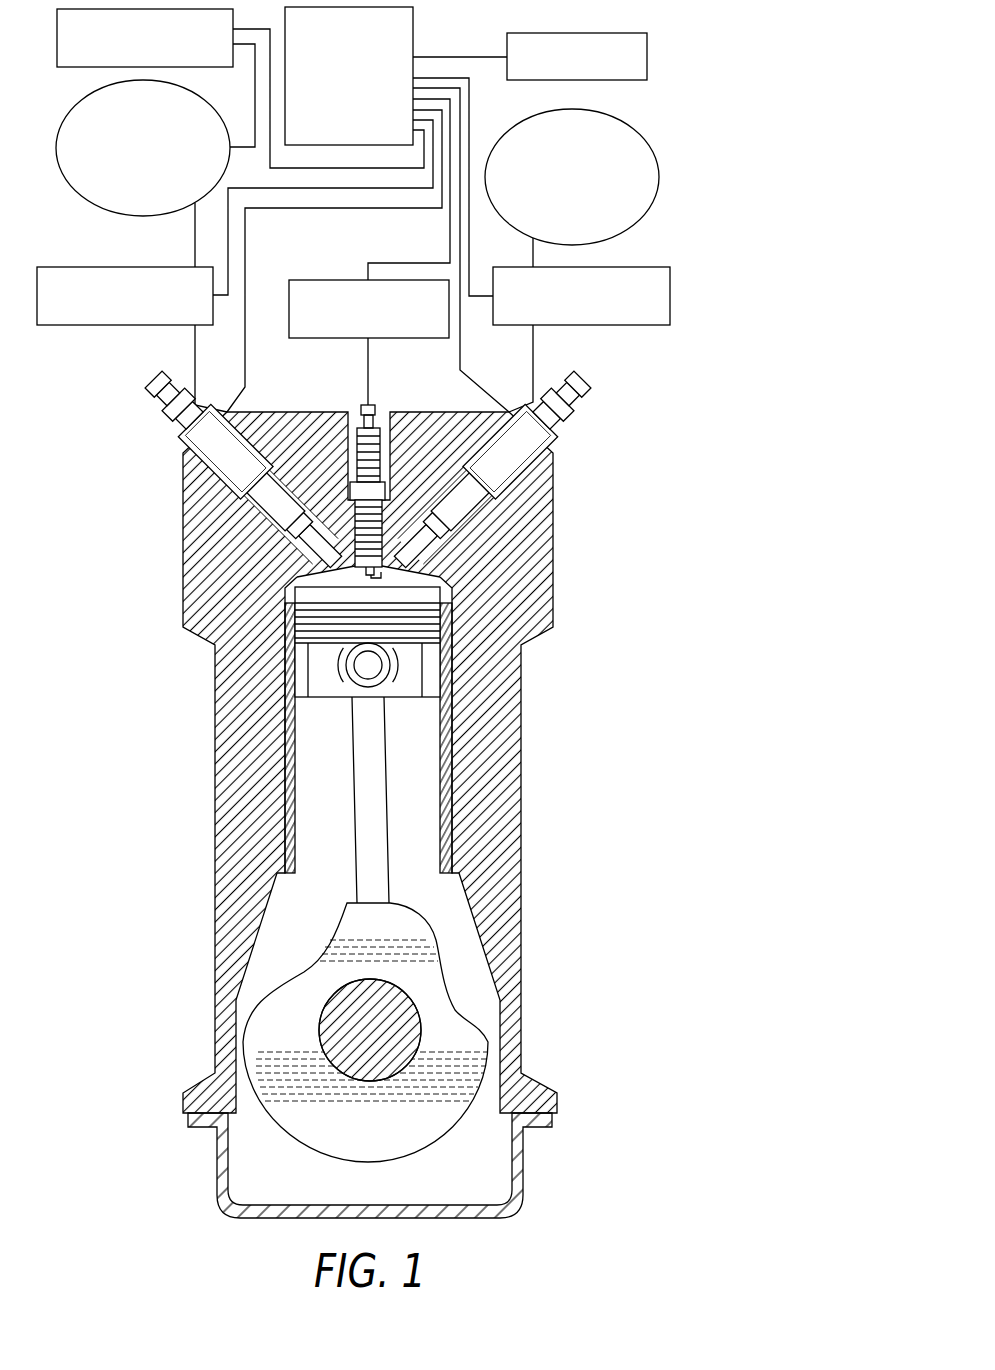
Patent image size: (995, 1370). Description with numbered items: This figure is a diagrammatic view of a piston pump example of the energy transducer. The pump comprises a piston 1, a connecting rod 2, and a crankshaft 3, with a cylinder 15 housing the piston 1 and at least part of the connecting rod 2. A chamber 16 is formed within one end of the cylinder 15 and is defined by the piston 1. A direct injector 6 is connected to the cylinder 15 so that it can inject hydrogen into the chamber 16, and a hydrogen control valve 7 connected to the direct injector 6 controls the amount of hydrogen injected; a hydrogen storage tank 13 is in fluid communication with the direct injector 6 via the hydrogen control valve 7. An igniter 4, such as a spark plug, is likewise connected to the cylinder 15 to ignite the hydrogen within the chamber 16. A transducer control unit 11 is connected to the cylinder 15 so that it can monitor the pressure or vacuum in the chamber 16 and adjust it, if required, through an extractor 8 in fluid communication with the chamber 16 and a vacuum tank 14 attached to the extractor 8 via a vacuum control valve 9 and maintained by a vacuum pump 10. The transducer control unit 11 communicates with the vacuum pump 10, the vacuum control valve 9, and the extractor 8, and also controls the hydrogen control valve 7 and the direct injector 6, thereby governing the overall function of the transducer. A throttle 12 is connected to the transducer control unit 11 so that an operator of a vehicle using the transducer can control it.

The piston 1 is at (315, 667).
The connecting rod 2 is at (372, 825).
The crankshaft 3 is at (352, 1025).
The igniter 4 is at (353, 483).
The direct injector 6 is at (463, 482).
The hydrogen control valve 7 is at (571, 312).
The extractor 8 is at (277, 498).
The vacuum control valve 9 is at (115, 312).
The vacuum pump 10 is at (128, 54).
The transducer control unit 11 is at (334, 92).
The throttle 12 is at (562, 73).
The hydrogen storage tank 13 is at (557, 194).
The vacuum tank 14 is at (128, 164).
The cylinder 15 is at (430, 778).
The chamber 16 is at (417, 577).